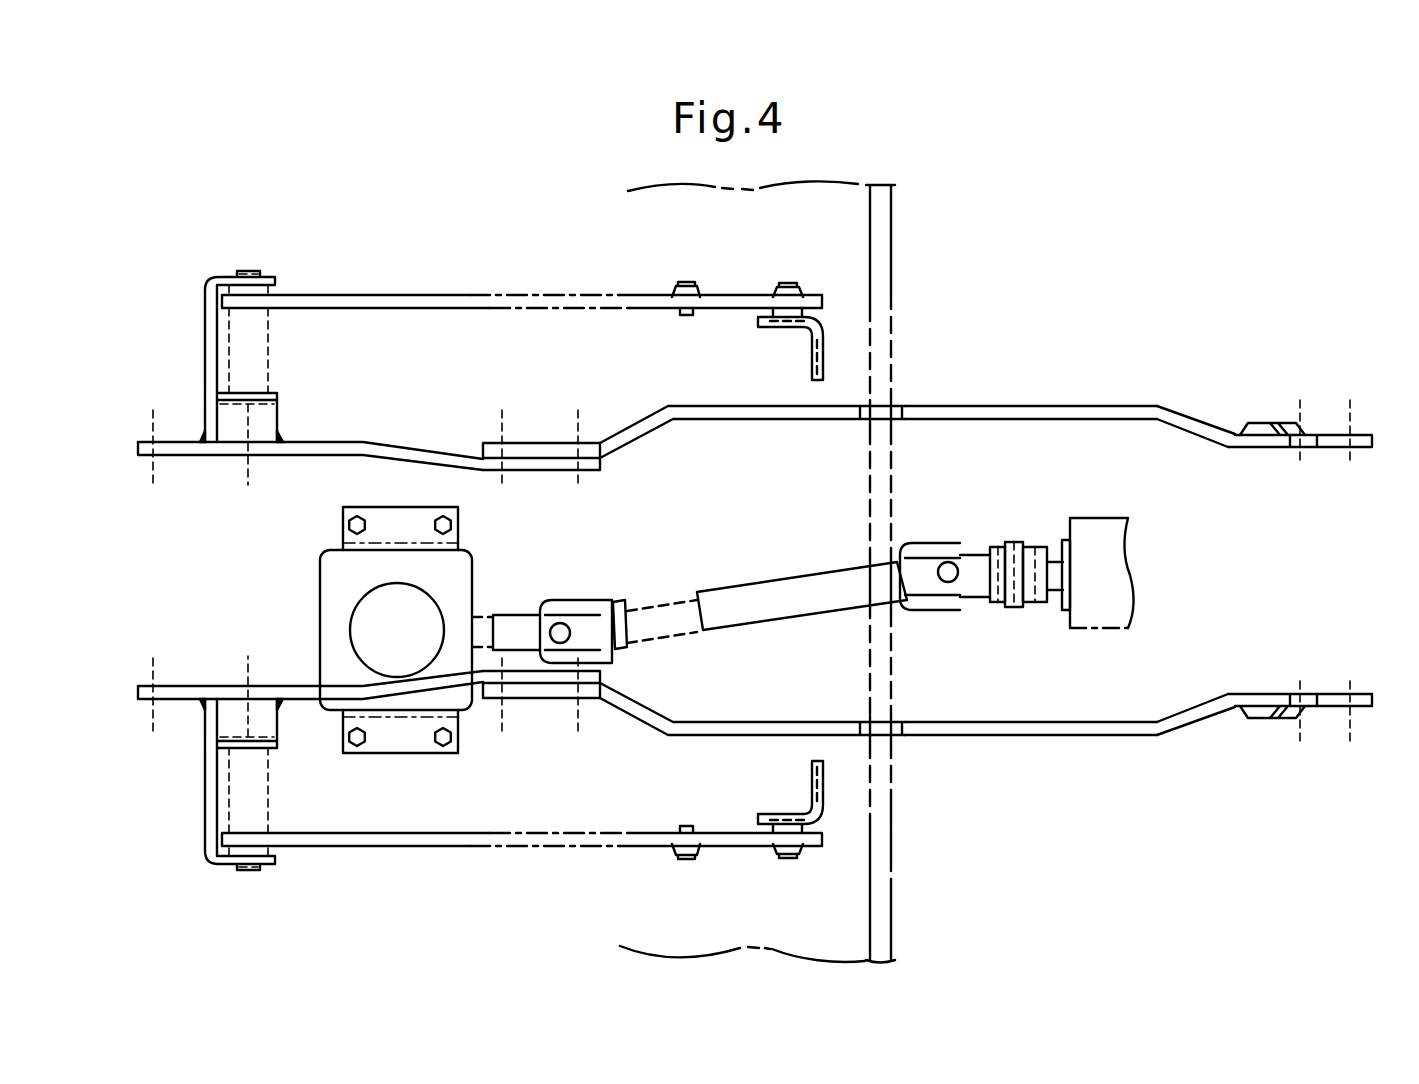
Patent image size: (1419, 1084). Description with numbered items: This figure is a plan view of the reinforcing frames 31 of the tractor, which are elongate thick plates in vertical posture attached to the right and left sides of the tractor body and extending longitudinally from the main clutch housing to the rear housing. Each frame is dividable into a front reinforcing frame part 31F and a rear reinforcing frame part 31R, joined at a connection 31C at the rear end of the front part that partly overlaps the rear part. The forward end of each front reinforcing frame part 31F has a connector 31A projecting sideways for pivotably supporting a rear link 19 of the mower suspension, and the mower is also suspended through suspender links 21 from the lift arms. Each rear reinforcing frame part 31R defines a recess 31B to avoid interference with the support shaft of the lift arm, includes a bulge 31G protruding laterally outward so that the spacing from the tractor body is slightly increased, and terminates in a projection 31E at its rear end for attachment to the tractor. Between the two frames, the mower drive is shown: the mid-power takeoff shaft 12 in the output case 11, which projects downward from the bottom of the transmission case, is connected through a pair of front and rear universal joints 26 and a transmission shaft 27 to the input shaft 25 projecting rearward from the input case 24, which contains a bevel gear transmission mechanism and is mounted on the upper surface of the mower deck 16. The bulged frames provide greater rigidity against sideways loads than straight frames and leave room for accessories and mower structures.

The output case 11 is at (1105, 520).
The mid-power takeoff shaft 12 is at (1062, 606).
The deck 16 is at (858, 236).
The rear links 19 is at (468, 848).
The suspender links 21 is at (700, 856).
The input case 24 is at (318, 624).
The input shaft 25 is at (483, 618).
The universal joints 26 is at (588, 600).
The transmission shaft 27 is at (799, 585).
The reinforcing frames 31 is at (755, 578).
The connector 31A is at (196, 570).
The recess 31B is at (852, 722).
The connection 31C is at (560, 678).
The projection 31E is at (1284, 713).
The front reinforcing frame parts 31F is at (320, 700).
The bulge 31G is at (990, 722).
The rear reinforcing frame parts 31R is at (1060, 737).